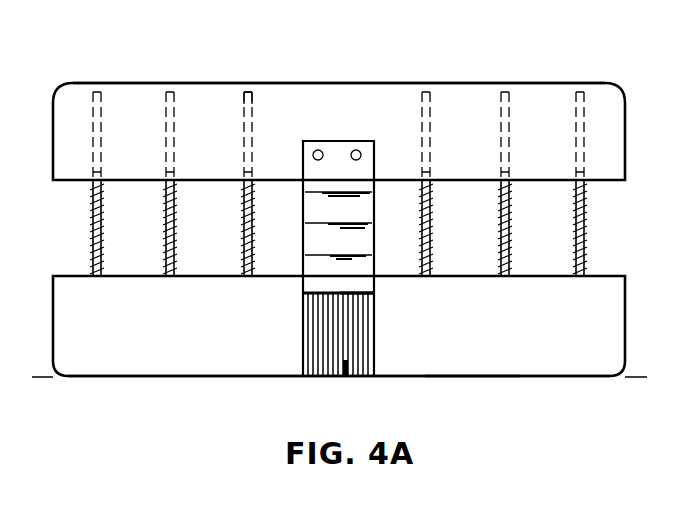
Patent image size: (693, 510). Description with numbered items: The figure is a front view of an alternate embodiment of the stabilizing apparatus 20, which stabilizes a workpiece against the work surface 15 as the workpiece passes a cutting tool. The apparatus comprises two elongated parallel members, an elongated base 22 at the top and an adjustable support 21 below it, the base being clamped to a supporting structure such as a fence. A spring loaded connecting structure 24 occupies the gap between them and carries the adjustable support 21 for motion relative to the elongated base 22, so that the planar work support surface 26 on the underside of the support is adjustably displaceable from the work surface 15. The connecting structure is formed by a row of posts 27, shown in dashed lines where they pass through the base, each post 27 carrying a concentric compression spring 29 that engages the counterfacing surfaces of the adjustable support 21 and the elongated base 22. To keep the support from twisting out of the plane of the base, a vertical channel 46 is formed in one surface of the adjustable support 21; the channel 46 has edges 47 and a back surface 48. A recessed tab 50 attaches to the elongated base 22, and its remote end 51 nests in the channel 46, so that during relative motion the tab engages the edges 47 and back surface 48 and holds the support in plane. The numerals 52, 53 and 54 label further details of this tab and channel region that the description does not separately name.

The work surface 15 is at (45, 376).
The stabilizing apparatus 20 is at (58, 94).
The adjustable support 21 is at (58, 313).
The elongated base 22 is at (214, 93).
The connecting structure 24 is at (481, 232).
The work support surface 26 is at (566, 376).
The post 27 is at (104, 214).
The compression spring 29 is at (104, 249).
The channel 46 is at (345, 376).
The edges 47 is at (313, 330).
The back surface 48 is at (474, 362).
The recessed tab 50 is at (343, 141).
The remote end 51 is at (305, 302).
The bolt head 52 is at (251, 98).
The contact plate 53 is at (345, 297).
The passage 54 is at (312, 283).